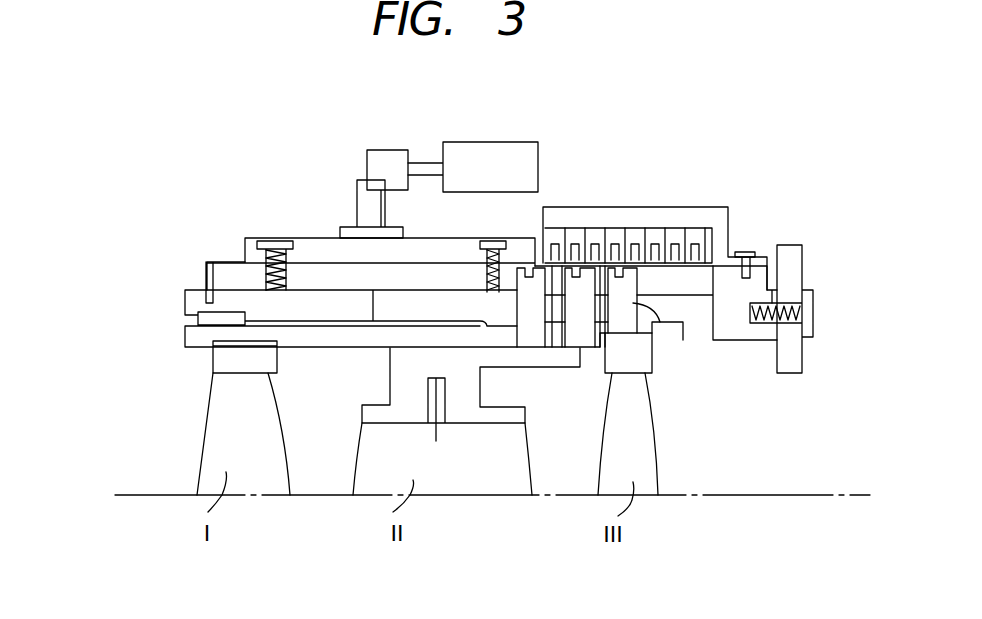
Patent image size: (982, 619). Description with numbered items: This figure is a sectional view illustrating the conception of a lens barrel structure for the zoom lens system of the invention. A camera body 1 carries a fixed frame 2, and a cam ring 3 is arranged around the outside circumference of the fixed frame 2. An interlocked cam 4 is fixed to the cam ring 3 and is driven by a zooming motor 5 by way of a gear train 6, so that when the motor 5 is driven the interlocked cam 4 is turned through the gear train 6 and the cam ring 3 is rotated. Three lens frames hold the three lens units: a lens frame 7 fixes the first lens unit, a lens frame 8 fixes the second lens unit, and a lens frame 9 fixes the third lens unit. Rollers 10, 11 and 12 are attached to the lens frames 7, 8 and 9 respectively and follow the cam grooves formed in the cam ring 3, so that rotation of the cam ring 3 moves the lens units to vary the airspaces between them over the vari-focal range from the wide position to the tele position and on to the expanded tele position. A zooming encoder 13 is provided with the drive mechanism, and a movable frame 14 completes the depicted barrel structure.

The camera body 1 is at (793, 270).
The frame 2 is at (730, 328).
The cam ring 3 is at (233, 272).
The interlocked cam 4 is at (316, 245).
The zooming motor 5 is at (515, 155).
The gear train 6 is at (418, 186).
The lens frame 7 is at (222, 358).
The lens frame 8 is at (400, 372).
The lens frame 9 is at (612, 352).
The roller 10 is at (590, 297).
The roller 11 is at (528, 335).
The roller 12 is at (658, 325).
The zooming encoder 13 is at (683, 207).
The movable frame 14 is at (187, 331).